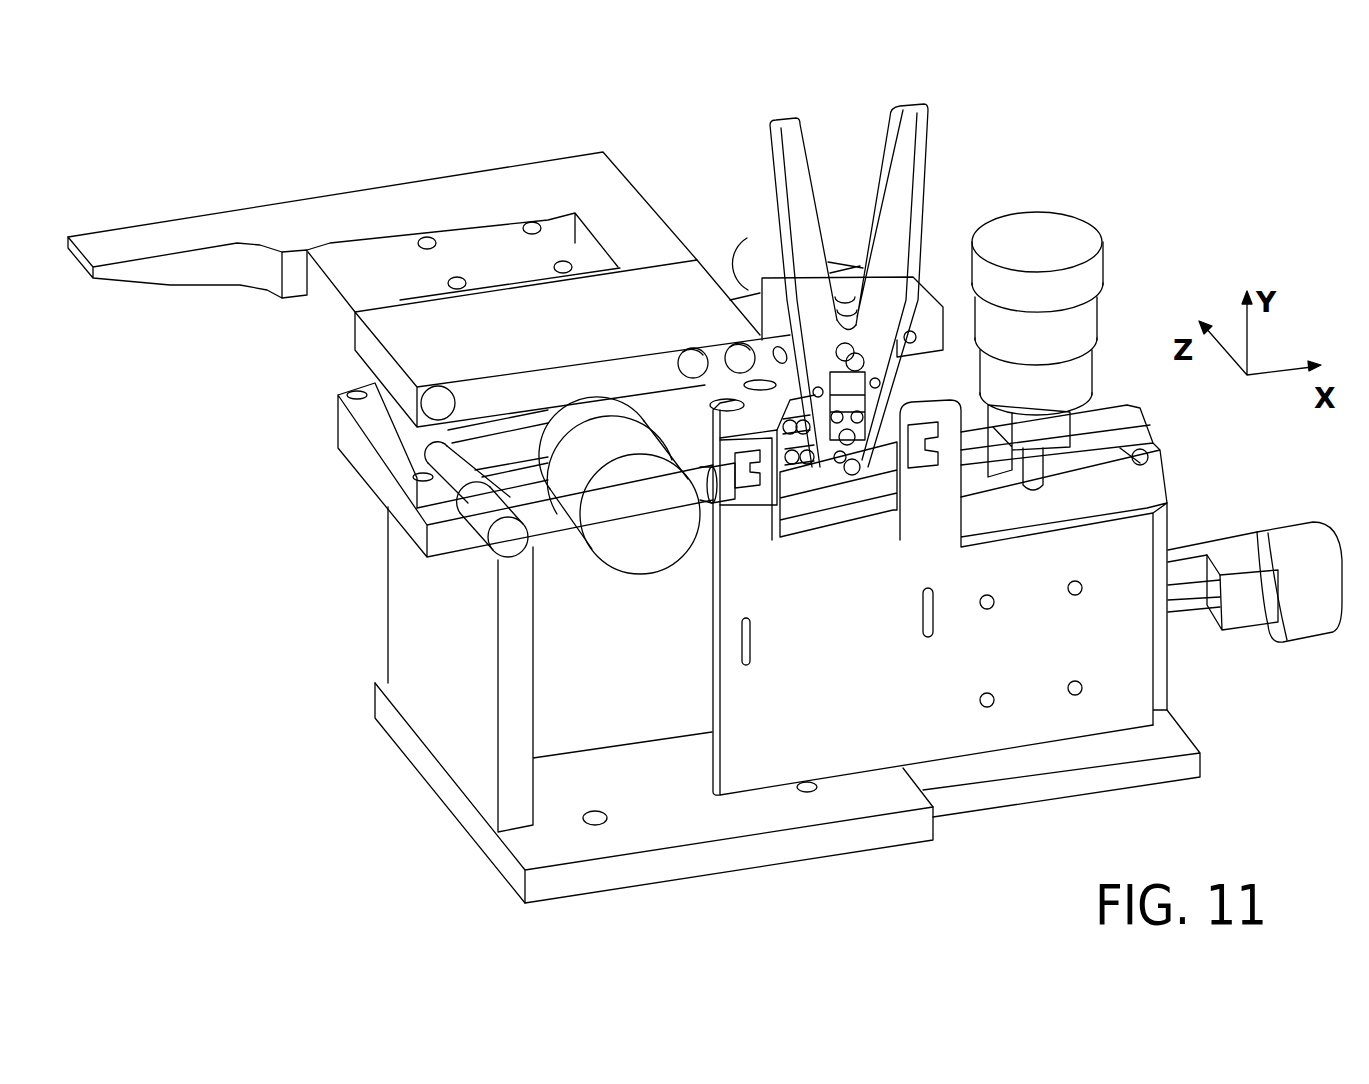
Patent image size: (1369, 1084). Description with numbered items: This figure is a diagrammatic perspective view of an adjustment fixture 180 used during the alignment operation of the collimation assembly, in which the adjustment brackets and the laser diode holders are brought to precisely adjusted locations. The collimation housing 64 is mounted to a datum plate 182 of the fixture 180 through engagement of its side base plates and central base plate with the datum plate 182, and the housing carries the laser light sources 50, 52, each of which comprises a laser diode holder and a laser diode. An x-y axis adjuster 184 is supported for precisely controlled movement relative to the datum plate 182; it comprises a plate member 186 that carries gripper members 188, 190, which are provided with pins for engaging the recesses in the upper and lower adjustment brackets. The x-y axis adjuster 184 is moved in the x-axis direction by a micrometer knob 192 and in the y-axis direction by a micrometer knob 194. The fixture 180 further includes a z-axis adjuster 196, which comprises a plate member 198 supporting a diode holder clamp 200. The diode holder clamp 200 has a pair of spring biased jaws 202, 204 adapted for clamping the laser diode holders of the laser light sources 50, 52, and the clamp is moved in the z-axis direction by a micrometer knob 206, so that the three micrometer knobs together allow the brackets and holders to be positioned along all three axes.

The laser light source 50 is at (827, 460).
The laser light source 52 is at (833, 467).
The collimation housing 64 is at (793, 405).
The adjustment fixture 180 is at (1167, 267).
The datum plate 182 is at (793, 405).
The x-y axis adjuster 184 is at (963, 523).
The plate member 186 is at (1117, 662).
The gripper member 188 is at (880, 450).
The gripper member 190 is at (790, 458).
The micrometer knob 192 is at (1303, 640).
The micrometer knob 194 is at (1057, 233).
The z-axis adjuster 196 is at (752, 228).
The plate member 198 is at (848, 285).
The diode holder clamp 200 is at (834, 260).
The spring biased jaw 202 is at (787, 113).
The spring biased jaw 204 is at (930, 138).
The micrometer knob 206 is at (610, 547).